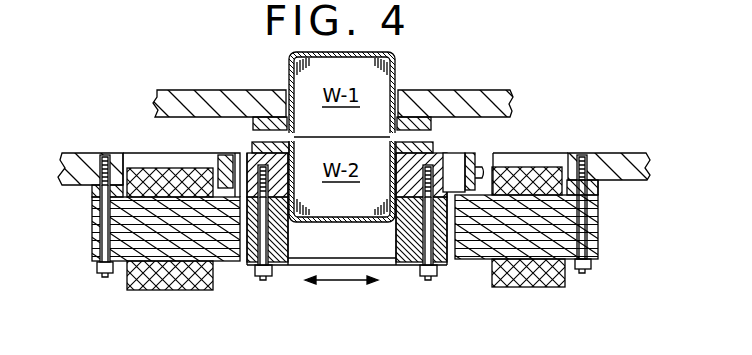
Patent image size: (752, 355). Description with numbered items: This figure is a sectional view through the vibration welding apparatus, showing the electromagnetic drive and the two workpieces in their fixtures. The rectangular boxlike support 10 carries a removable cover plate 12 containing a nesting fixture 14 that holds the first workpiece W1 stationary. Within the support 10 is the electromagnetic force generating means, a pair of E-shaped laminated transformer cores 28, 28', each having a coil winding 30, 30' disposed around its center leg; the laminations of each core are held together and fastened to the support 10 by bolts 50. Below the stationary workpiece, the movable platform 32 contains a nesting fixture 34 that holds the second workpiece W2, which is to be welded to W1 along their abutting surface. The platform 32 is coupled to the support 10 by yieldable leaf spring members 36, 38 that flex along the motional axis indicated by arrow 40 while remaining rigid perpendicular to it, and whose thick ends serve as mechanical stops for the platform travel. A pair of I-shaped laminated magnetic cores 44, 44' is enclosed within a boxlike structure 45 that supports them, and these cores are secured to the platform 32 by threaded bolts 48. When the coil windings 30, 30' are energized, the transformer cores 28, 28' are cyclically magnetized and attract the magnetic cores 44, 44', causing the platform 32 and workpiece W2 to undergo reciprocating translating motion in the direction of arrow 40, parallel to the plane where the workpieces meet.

The support 10 is at (78, 162).
The cover plate 12 is at (215, 95).
The nesting fixture 14 is at (253, 125).
The laminated transformer core 28 is at (172, 231).
The laminated transformer core 28' is at (517, 229).
The coil winding 30 is at (169, 248).
The coil winding 30' is at (528, 249).
The movable platform 32 is at (277, 173).
The nesting fixture 34 is at (433, 147).
The leaf spring member 36 is at (230, 163).
The leaf spring member 38 is at (467, 157).
The arrow 40 is at (343, 283).
The magnetic core 44 is at (284, 255).
The magnetic core 44' is at (421, 256).
The boxlike structure 45 is at (392, 267).
The threaded bolt 48 is at (427, 216).
The bolt 50 is at (107, 271).